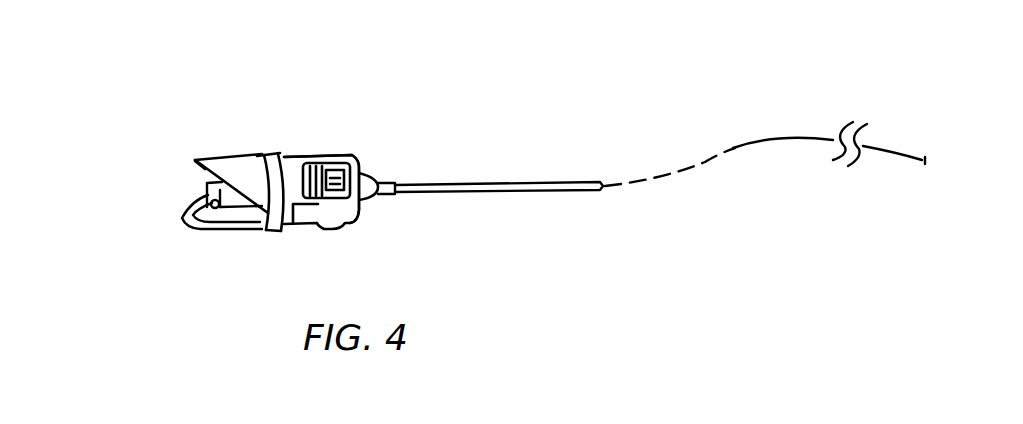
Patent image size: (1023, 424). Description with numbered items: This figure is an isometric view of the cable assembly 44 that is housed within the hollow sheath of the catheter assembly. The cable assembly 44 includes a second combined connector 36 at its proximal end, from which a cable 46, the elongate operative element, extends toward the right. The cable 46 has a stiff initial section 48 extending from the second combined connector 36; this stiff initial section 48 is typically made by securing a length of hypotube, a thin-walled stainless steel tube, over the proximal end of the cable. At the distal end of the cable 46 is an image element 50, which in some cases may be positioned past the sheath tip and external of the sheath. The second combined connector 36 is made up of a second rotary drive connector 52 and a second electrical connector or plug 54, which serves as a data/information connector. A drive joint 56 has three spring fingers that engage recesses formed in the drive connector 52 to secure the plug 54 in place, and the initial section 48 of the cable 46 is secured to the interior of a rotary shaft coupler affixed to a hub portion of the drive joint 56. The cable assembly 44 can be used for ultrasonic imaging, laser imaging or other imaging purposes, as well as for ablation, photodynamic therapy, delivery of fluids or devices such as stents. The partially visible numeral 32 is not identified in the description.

The needle assembly 32 is at (212, 7).
The second combined connector 36 is at (274, 142).
The cable assembly 44 is at (700, 53).
The cable 46 is at (702, 165).
The stiff initial section 48 is at (473, 192).
The image element 50 is at (928, 160).
The second rotary drive connector 52 is at (188, 230).
The second electrical connector or plug 54 is at (207, 184).
The drive joint 56 is at (345, 153).